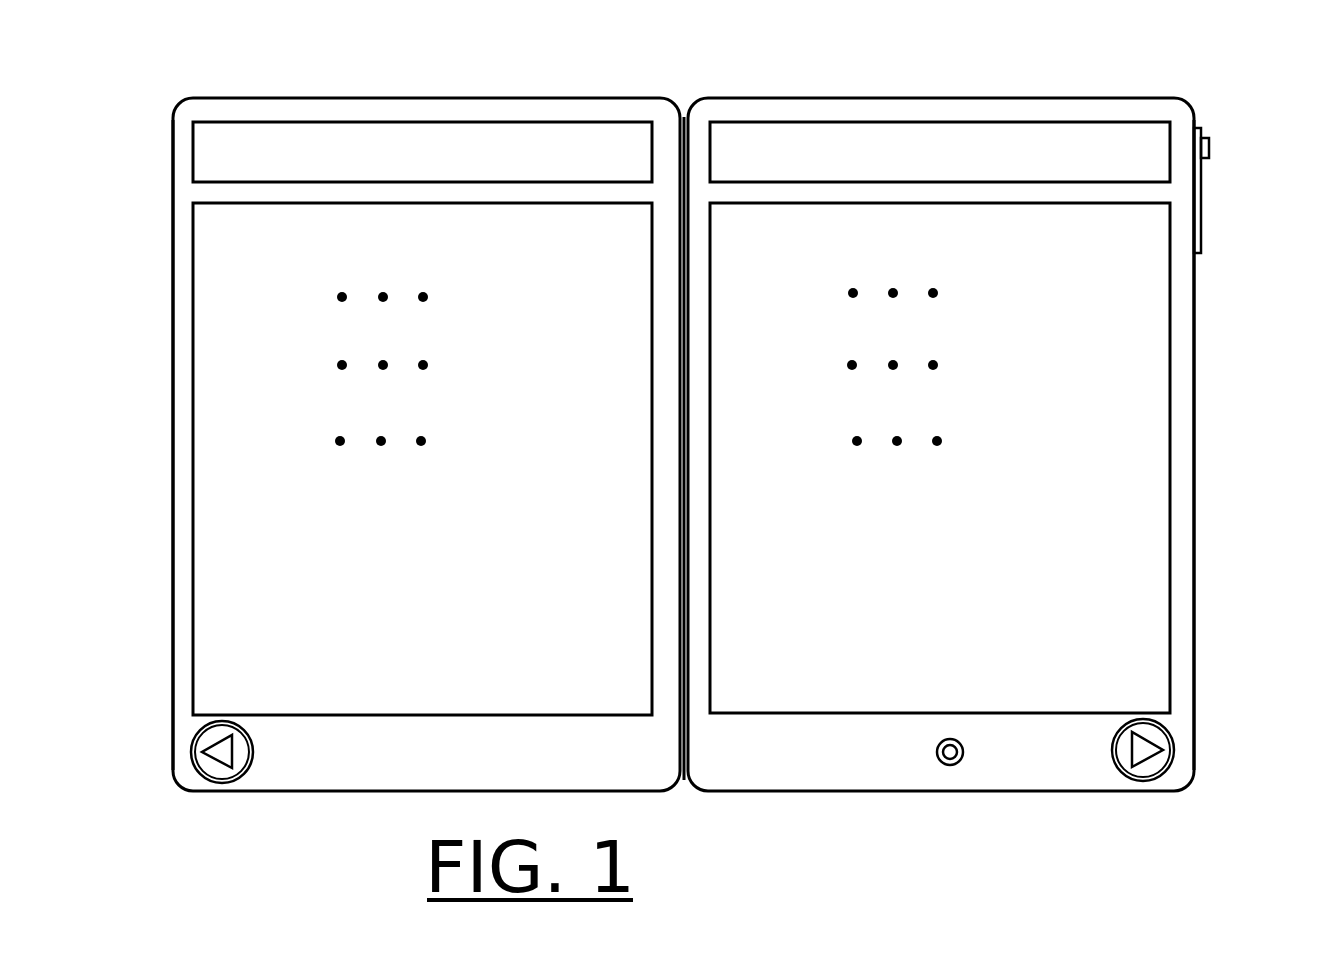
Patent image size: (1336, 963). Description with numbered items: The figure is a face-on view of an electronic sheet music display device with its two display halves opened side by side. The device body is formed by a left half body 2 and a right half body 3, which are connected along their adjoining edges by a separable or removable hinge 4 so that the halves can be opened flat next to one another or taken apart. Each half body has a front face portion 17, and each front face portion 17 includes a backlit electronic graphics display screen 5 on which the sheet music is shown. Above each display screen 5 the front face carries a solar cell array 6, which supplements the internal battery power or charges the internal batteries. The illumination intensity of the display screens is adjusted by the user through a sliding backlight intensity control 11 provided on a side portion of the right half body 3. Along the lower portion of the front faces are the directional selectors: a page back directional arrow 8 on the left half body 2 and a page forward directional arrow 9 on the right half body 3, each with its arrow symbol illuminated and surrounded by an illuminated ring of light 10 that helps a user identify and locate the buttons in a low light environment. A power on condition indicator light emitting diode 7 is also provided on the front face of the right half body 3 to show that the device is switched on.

The left half body 2 is at (383, 755).
The right half body 3 is at (790, 750).
The separable or removable hinge 4 is at (685, 762).
The backlit electronic graphics display screen 5 is at (473, 553).
The solar cell array 6 is at (595, 142).
The power on condition indicator light emitting diode 7 is at (963, 755).
The page back directional arrow selector 8 is at (223, 750).
The page forward directional arrow selector 9 is at (1145, 740).
The ring of light 10 is at (1162, 775).
The backlight intensity control 11 is at (1209, 148).
The front face portion 17 is at (180, 348).